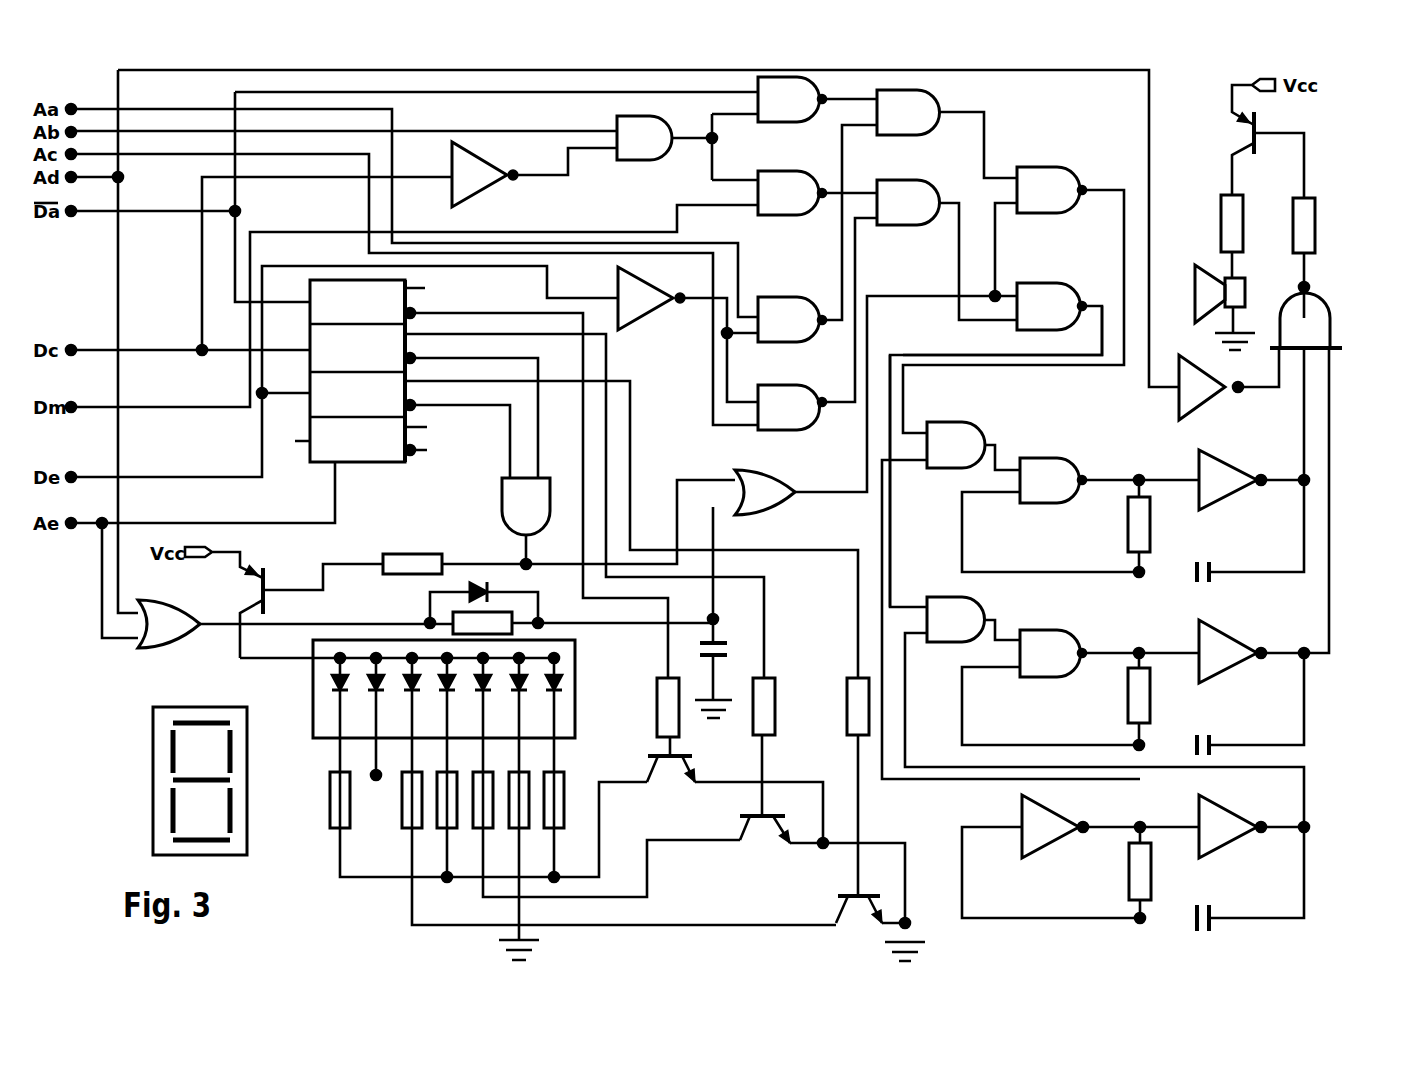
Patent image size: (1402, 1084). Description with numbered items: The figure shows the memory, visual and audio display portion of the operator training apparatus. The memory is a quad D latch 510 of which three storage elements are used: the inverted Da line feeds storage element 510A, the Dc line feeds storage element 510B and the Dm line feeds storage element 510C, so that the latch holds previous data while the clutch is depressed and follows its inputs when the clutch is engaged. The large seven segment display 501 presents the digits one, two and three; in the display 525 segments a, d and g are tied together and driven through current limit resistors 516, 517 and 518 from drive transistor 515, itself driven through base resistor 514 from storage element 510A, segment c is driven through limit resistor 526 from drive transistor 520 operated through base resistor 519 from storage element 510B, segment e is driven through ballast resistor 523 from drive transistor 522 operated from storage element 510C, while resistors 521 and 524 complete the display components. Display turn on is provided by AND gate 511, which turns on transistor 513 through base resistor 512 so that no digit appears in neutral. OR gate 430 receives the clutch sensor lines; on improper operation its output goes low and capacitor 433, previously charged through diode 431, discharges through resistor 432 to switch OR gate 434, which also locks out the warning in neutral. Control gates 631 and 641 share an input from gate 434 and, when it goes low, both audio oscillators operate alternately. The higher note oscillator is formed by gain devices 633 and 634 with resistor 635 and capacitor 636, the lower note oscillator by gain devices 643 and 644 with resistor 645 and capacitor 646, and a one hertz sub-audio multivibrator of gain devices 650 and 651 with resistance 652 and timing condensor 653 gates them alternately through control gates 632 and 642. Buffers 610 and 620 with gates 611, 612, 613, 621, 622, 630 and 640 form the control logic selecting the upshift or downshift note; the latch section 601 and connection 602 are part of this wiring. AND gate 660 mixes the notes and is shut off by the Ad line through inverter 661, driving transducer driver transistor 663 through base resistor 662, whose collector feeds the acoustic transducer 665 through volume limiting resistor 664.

The OR gate 430 is at (192, 599).
The diode 431 is at (496, 584).
The resistor 432 is at (445, 608).
The capacitor 433 is at (693, 652).
The OR gate 434 is at (791, 483).
The seven segment display 501 is at (150, 758).
The quad D latch 510 is at (359, 384).
The storage element 510A is at (357, 302).
The storage element 510B is at (357, 348).
The storage element 510C is at (357, 394).
The AND gate 511 is at (498, 510).
The base resistor 512 is at (420, 553).
The transistor 513 is at (281, 564).
The base resistor 514 is at (657, 708).
The drive transistor 515 is at (672, 780).
The current limit resistor 516 is at (567, 786).
The current limit resistor 517 is at (446, 838).
The current limit resistor 518 is at (325, 806).
The base resistor 519 is at (783, 695).
The drive transistor 520 is at (770, 840).
The resistor 521 is at (843, 712).
The drive transistor 522 is at (832, 898).
The ballast resistor 523 is at (398, 815).
The resistor 524 is at (525, 835).
The display 525 is at (313, 725).
The limit resistor 526 is at (485, 840).
The latch circuit 601 is at (1065, 372).
The connection line 602 is at (897, 530).
The buffer 610 is at (492, 162).
The gate 611 is at (674, 122).
The gate 612 is at (816, 88).
The gate 613 is at (804, 161).
The buffer 620 is at (662, 288).
The gate 621 is at (811, 286).
The gate 622 is at (811, 383).
The gate 630 is at (934, 90).
The control gate 631 is at (1078, 153).
The control gate 632 is at (963, 415).
The gain device 633 is at (1076, 447).
The gain device 634 is at (1250, 459).
The resistor 635 is at (1128, 532).
The capacitor 636 is at (1215, 560).
The gate 640 is at (948, 175).
The control gate 641 is at (1068, 268).
The control gate 642 is at (1000, 608).
The gain device 643 is at (1086, 623).
The gain device 644 is at (1243, 623).
The resistor 645 is at (1125, 698).
The capacitor 646 is at (1215, 730).
The gain device 650 is at (1062, 841).
The gain device 651 is at (1238, 806).
The resistance 652 is at (1128, 868).
The timing condensor 653 is at (1215, 912).
The AND gate 660 is at (1330, 300).
The inverter 661 is at (1210, 386).
The base resistor 662 is at (1318, 212).
The transducer driver transistor 663 is at (1232, 135).
The volume limiting resistor 664 is at (1215, 206).
The acoustic transducer 665 is at (1190, 268).